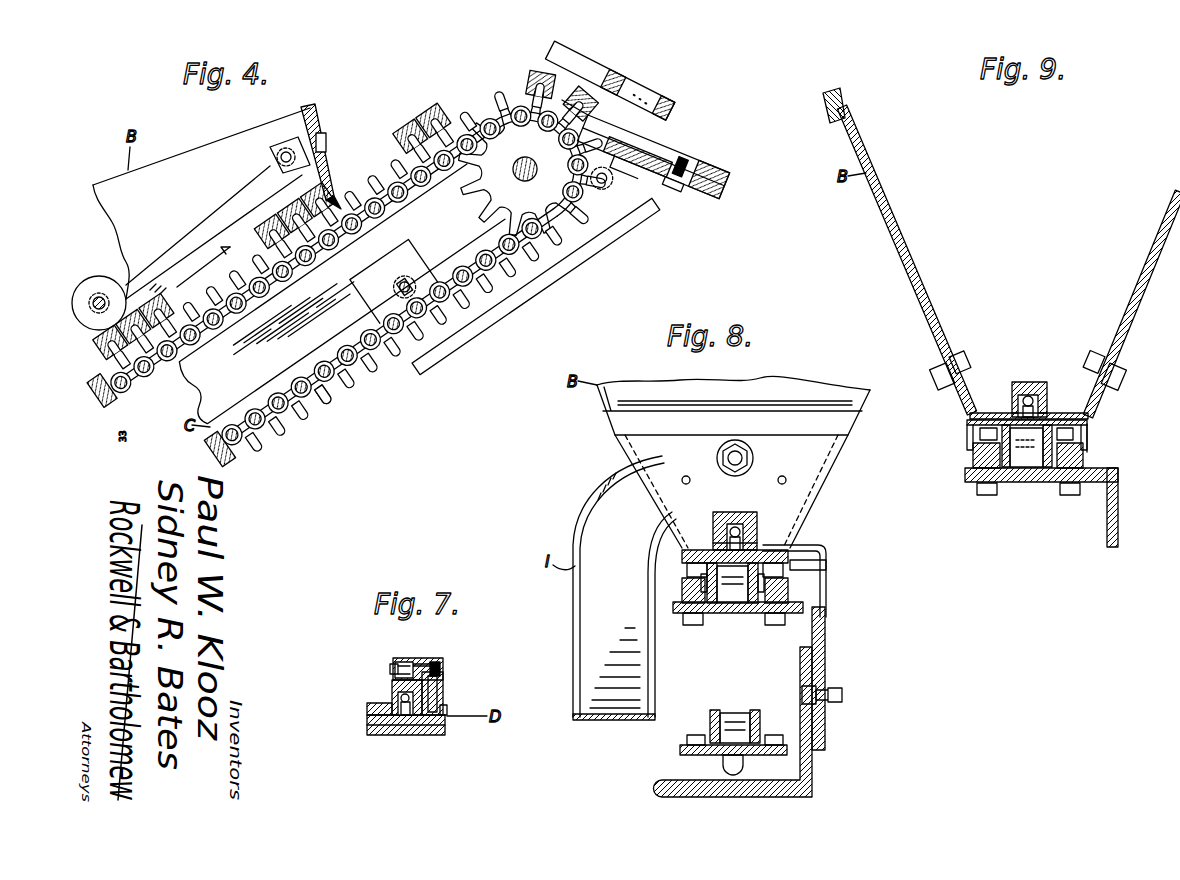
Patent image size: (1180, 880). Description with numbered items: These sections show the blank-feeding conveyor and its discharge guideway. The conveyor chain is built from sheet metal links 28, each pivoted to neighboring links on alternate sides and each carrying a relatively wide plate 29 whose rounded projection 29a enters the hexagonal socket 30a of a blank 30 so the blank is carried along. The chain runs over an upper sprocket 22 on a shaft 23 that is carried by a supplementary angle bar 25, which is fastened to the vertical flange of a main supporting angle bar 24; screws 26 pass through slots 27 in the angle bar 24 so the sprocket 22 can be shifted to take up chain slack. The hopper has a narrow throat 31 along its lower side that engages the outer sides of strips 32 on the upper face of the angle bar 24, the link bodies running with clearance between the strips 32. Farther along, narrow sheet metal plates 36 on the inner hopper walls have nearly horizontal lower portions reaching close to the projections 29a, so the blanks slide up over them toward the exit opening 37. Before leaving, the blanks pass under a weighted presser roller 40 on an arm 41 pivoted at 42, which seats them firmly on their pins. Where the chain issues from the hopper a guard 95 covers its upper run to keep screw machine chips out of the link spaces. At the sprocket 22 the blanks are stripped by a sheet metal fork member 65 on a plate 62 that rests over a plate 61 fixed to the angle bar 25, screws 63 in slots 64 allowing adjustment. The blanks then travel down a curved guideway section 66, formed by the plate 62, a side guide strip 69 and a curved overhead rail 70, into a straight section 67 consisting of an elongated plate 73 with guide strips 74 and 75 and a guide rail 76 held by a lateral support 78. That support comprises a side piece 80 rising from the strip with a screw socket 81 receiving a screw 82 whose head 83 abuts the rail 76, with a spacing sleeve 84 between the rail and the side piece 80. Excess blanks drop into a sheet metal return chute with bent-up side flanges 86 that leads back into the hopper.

In FIG. 4, the upper sprocket 22 is at (480, 198).
In FIG. 4, the upper sprocket shaft 23 is at (512, 169).
In FIG. 4, the main supporting angle bar 24 is at (196, 384).
In FIG. 8, the main supporting angle bar 24 is at (825, 652).
In FIG. 9, the main supporting angle bar 24 is at (1107, 535).
In FIG. 4, the supplementary angle bar 25 is at (557, 277).
In FIG. 8, the supplementary angle bar 25 is at (812, 775).
In FIG. 4, the screws 26 is at (398, 288).
In FIG. 8, the screws 26 is at (842, 695).
In FIG. 4, the slots 27 is at (416, 265).
In FIG. 8, the slots 27 is at (826, 680).
In FIG. 4, the chain link 28 is at (338, 372).
In FIG. 8, the chain link 28 is at (722, 603).
In FIG. 9, the chain link 28 is at (1025, 467).
In FIG. 4, the plate 29 is at (366, 380).
In FIG. 8, the plate 29 is at (788, 556).
In FIG. 9, the plate 29 is at (967, 427).
In FIG. 4, the rounded projection 29a is at (392, 378).
In FIG. 8, the rounded projection 29a is at (720, 548).
In FIG. 9, the rounded projection 29a is at (1018, 412).
In FIG. 4, the blank 30 is at (153, 310).
In FIG. 8, the blank 30 is at (756, 517).
In FIG. 9, the blank 30 is at (1022, 382).
In FIG. 7, the blank 30 is at (392, 690).
In FIG. 4, the hexagonal socket 30a is at (124, 334).
In FIG. 8, the hexagonal socket 30a is at (743, 538).
In FIG. 9, the hexagonal socket 30a is at (1031, 397).
In FIG. 7, the hexagonal socket 30a is at (417, 728).
In FIG. 8, the throat 31 is at (826, 572).
In FIG. 9, the throat 31 is at (1088, 432).
In FIG. 8, the strips 32 is at (682, 593).
In FIG. 9, the strips 32 is at (973, 458).
In FIG. 4, the sheet metal plates 36 is at (182, 265).
In FIG. 9, the sheet metal plates 36 is at (967, 390).
In FIG. 4, the exit opening 37 is at (336, 194).
In FIG. 8, the exit opening 37 is at (737, 512).
In FIG. 4, the presser roller 40 is at (98, 278).
In FIG. 4, the pivoted arm 41 is at (212, 210).
In FIG. 4, the pivot 42 is at (285, 150).
In FIG. 4, the plate 61 is at (712, 198).
In FIG. 4, the plate 62 is at (725, 180).
In FIG. 4, the screws 63 is at (672, 196).
In FIG. 4, the slots 64 is at (658, 182).
In FIG. 4, the fork member 65 is at (607, 123).
In FIG. 4, the curved section 66 is at (660, 155).
In FIG. 4, the side guide strip 69 is at (688, 166).
In FIG. 4, the overhead rail 70 is at (676, 100).
In FIG. 7, the straight section 67 is at (367, 723).
In FIG. 7, the elongated plate 73 is at (400, 735).
In FIG. 7, the guide strip 74 is at (367, 707).
In FIG. 7, the guide strip 75 is at (447, 710).
In FIG. 7, the guide rail 76 is at (404, 662).
In FIG. 7, the lateral support 78 is at (447, 658).
In FIG. 7, the side piece 80 is at (443, 690).
In FIG. 7, the screw socket 81 is at (443, 676).
In FIG. 7, the screw 82 is at (436, 662).
In FIG. 7, the screw head 83 is at (392, 669).
In FIG. 7, the spacing sleeve 84 is at (418, 664).
In FIG. 8, the side flanges 86 is at (573, 664).
In FIG. 8, the guard 95 is at (822, 545).